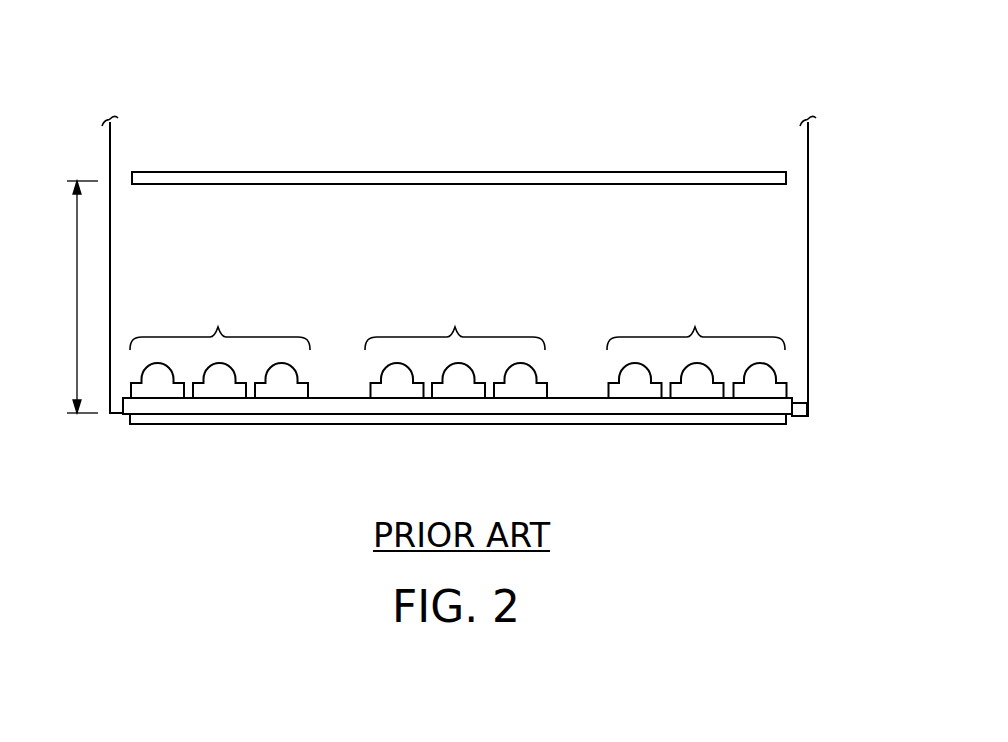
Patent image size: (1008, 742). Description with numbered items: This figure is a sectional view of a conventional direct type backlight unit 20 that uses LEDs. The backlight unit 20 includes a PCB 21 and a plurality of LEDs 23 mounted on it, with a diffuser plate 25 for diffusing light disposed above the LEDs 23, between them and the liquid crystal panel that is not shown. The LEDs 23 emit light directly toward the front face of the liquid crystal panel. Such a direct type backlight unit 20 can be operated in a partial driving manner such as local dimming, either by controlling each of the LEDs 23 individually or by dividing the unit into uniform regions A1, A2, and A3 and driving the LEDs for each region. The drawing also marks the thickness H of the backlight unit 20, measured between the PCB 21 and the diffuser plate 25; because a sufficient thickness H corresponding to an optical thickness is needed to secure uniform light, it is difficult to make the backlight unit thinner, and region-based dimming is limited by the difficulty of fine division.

The backlight unit 20 is at (478, 28).
The PCB 21 is at (787, 408).
The LEDs 23 is at (763, 375).
The diffuser plate 25 is at (450, 172).
The region A1 is at (220, 320).
The region A2 is at (455, 320).
The region A3 is at (696, 320).
The thickness H is at (70, 297).